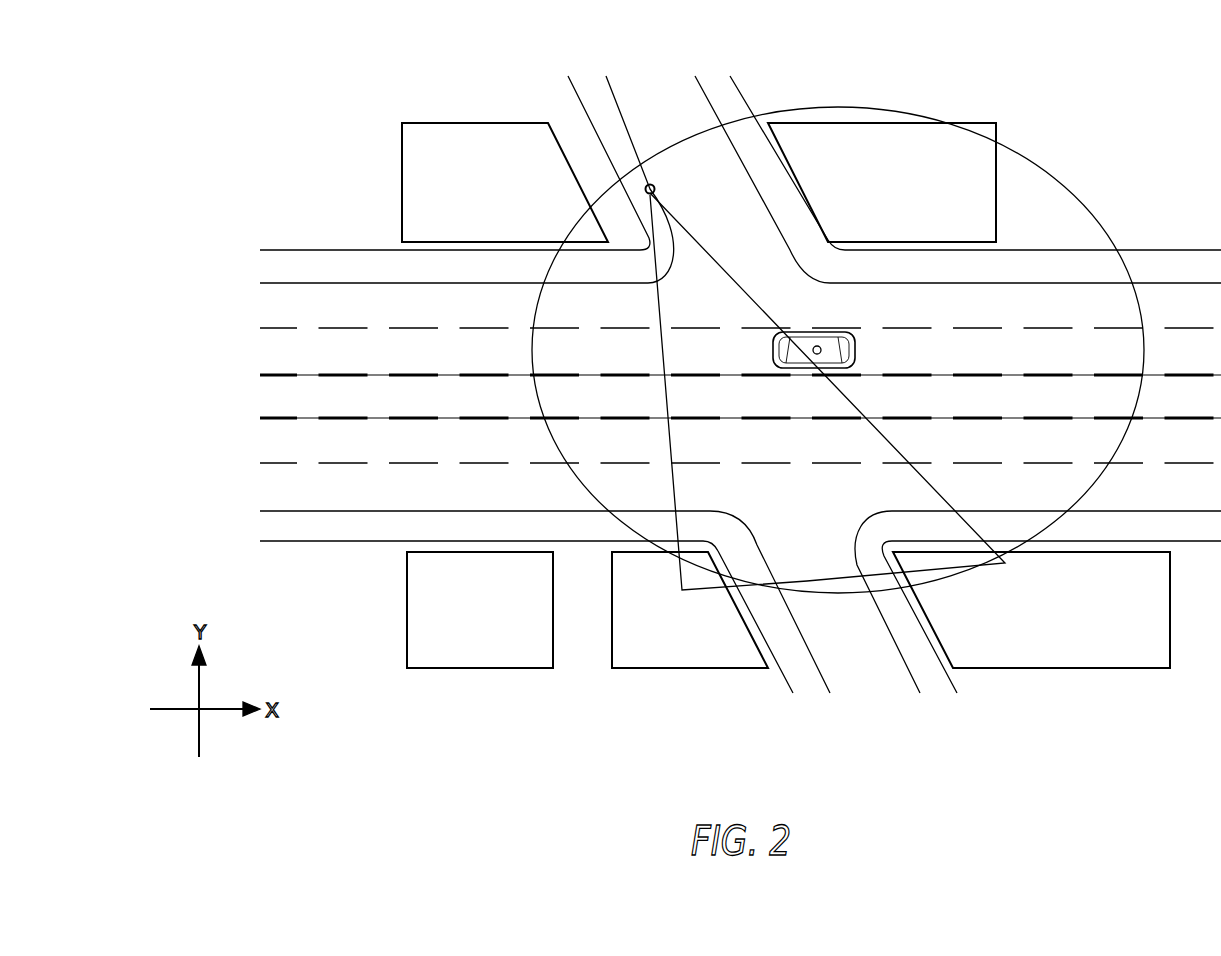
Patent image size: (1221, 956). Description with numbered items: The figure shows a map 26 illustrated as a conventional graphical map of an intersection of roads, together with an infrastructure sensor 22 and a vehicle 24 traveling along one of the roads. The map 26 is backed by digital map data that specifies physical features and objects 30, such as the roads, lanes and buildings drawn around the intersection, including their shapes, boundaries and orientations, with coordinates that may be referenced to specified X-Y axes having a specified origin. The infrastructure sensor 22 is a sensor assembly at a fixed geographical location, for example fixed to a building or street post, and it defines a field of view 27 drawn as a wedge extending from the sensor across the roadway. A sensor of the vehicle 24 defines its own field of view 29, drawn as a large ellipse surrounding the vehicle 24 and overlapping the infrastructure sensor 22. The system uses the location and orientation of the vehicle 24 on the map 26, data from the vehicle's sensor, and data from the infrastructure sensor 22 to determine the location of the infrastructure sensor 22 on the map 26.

The infrastructure sensor 22 is at (650, 184).
The vehicle 24 is at (840, 330).
The map 26 is at (276, 94).
The field of view 27 is at (807, 583).
The field of view 29 is at (1067, 188).
The objects 30 is at (630, 668).